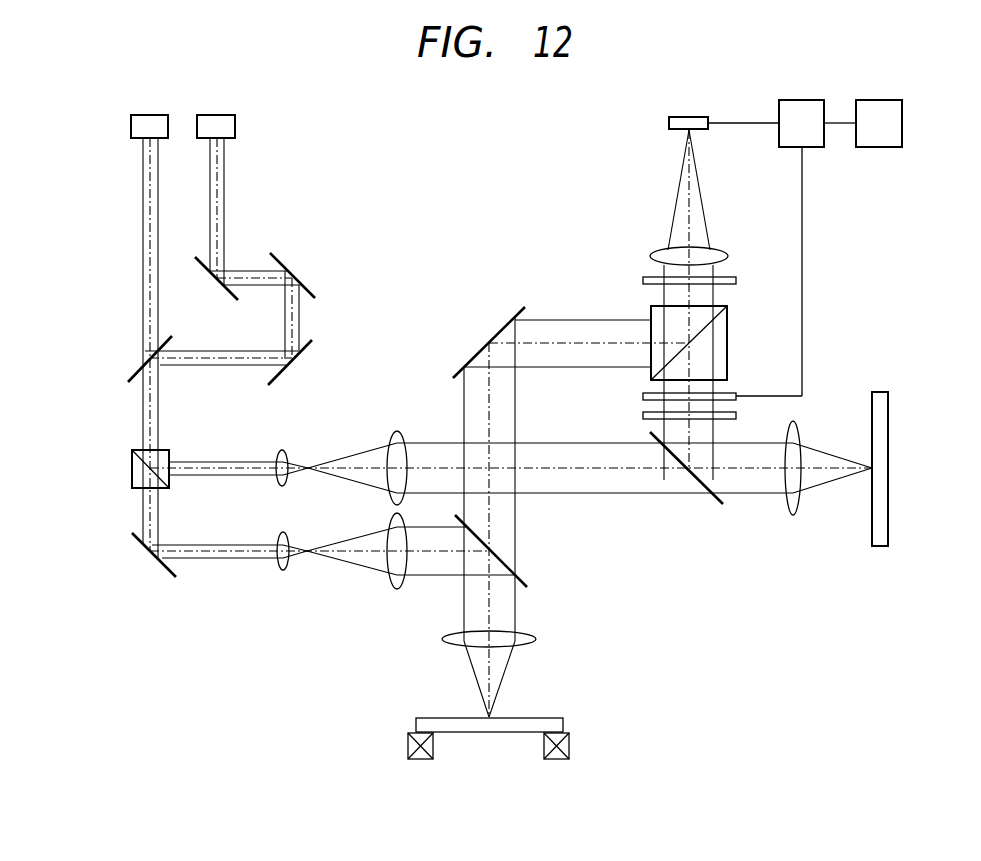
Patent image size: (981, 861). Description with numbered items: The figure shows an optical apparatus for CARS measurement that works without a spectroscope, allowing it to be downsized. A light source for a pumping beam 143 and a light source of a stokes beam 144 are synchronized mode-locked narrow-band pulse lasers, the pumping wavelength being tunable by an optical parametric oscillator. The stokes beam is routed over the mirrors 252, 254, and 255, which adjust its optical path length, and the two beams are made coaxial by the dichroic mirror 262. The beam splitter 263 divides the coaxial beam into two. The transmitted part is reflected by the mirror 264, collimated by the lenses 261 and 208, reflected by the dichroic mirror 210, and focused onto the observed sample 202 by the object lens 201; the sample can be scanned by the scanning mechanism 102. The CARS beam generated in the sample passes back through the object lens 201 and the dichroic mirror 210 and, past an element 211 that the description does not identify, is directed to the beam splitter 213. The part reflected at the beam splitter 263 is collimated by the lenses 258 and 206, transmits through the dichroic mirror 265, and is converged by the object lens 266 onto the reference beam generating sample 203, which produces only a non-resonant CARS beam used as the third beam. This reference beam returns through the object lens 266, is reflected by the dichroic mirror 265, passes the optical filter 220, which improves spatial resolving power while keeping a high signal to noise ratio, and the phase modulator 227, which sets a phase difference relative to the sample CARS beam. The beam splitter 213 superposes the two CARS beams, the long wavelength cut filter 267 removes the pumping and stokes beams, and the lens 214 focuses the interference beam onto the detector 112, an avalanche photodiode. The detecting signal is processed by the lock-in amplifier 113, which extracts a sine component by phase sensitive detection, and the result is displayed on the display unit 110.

The light source for a pumping beam 143 is at (152, 114).
The light source of a stokes beam 144 is at (221, 114).
The mirror 252 is at (218, 283).
The mirror 254 is at (297, 279).
The mirror 255 is at (306, 347).
The dichroic mirror 262 is at (130, 378).
The beam splitter 263 is at (132, 462).
The mirror 264 is at (150, 554).
The lens 258 is at (282, 449).
The lens 261 is at (283, 572).
The lens 206 is at (394, 433).
The lens 208 is at (390, 520).
The mirror 211 is at (473, 357).
The dichroic mirror 210 is at (522, 583).
The object lens 201 is at (445, 638).
The observed sample 202 is at (537, 717).
The scanning mechanism 102 is at (571, 745).
The dichroic mirror 265 is at (713, 500).
The object lens 266 is at (793, 518).
The reference beam generating sample 203 is at (890, 480).
The optical filter 220 is at (643, 416).
The phase modulator 227 is at (643, 396).
The beam splitter 213 is at (651, 308).
The long wavelength cut filter 267 is at (643, 280).
The lens 214 is at (652, 252).
The detector 112 is at (689, 116).
The lock-in amplifier 113 is at (806, 99).
The display unit 110 is at (885, 99).